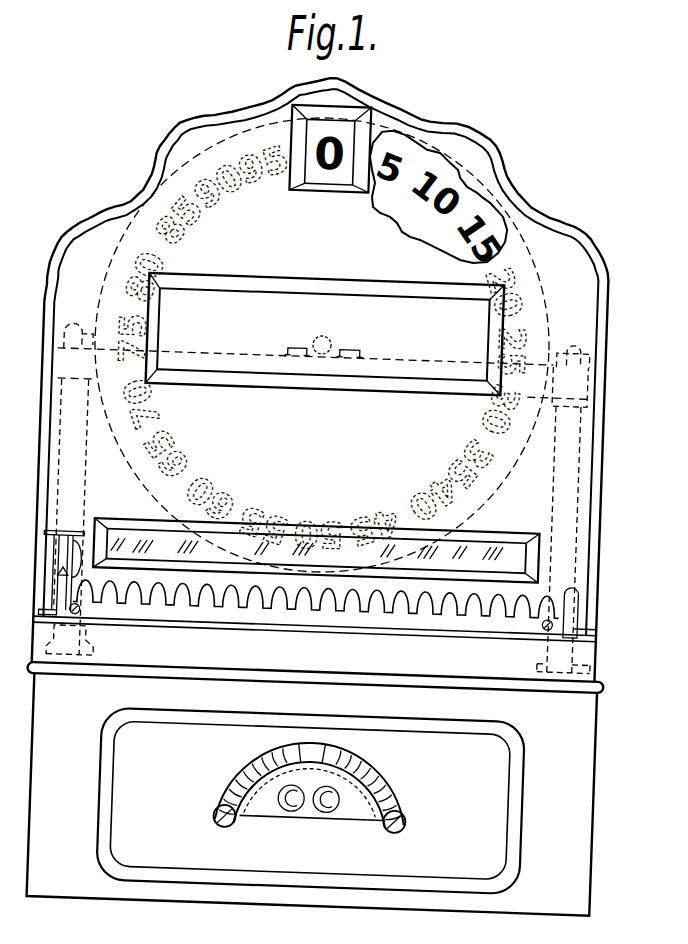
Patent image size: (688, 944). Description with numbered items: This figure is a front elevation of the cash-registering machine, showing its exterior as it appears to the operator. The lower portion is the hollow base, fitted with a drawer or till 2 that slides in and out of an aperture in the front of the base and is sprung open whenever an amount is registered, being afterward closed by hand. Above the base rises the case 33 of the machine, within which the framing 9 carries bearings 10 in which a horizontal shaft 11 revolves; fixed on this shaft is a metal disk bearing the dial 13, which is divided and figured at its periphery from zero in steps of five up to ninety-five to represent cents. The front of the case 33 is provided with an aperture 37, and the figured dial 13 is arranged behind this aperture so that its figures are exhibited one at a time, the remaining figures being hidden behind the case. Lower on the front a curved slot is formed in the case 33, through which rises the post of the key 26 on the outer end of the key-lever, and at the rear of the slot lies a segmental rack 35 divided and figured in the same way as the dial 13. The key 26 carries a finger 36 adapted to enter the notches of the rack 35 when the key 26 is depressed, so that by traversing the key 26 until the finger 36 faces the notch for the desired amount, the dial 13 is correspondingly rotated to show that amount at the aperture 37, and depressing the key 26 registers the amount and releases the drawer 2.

The drawer or till 2 is at (312, 794).
The framing 9 is at (534, 363).
The bearings 10 is at (288, 349).
The horizontal shaft 11 is at (340, 345).
The dial 13 is at (475, 195).
The key 26 is at (59, 551).
The case 33 is at (321, 443).
The segmental rack 35 is at (345, 616).
The finger 36 is at (65, 579).
The aperture 37 is at (345, 121).